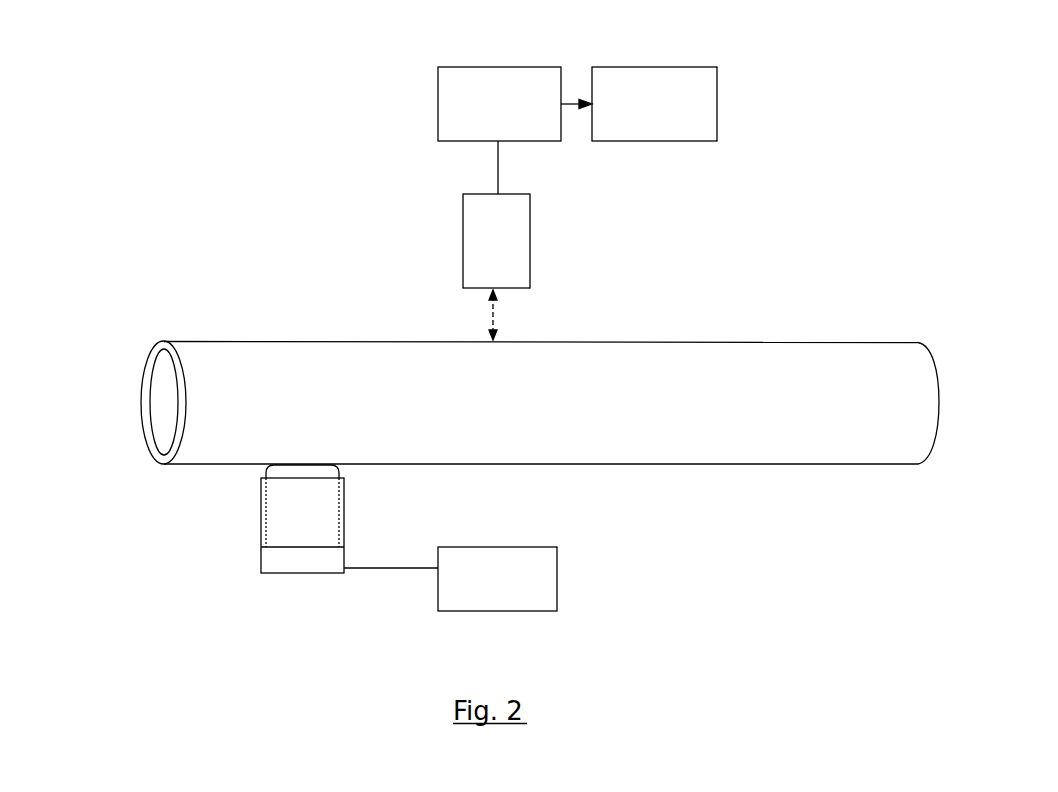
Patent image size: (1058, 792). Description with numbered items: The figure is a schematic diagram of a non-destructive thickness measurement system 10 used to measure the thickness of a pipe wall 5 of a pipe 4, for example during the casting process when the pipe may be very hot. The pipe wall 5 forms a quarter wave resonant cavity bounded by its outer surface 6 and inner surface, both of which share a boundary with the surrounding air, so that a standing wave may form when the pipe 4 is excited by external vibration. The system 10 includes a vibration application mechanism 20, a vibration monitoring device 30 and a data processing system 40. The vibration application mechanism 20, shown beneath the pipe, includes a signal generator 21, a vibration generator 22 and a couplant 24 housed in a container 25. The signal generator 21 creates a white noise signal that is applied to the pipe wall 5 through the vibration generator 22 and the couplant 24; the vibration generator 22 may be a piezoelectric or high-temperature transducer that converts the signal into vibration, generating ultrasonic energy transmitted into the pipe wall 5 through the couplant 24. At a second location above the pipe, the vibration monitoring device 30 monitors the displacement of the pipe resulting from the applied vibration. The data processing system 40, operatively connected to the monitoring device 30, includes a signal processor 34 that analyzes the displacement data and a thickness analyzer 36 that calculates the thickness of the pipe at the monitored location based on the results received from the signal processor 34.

The pipe 4 is at (103, 376).
The pipe wall 5 is at (163, 344).
The outer surface 6 is at (602, 341).
The non-destructive thickness measurement system 10 is at (199, 154).
The vibration application mechanism 20 is at (170, 534).
The signal generator 21 is at (513, 594).
The vibration generator 22 is at (305, 573).
The couplant 24 is at (266, 470).
The container 25 is at (344, 499).
The vibration monitoring device 30 is at (512, 256).
The signal processor 34 is at (515, 115).
The thickness analyzer 36 is at (670, 115).
The data processing system 40 is at (782, 101).